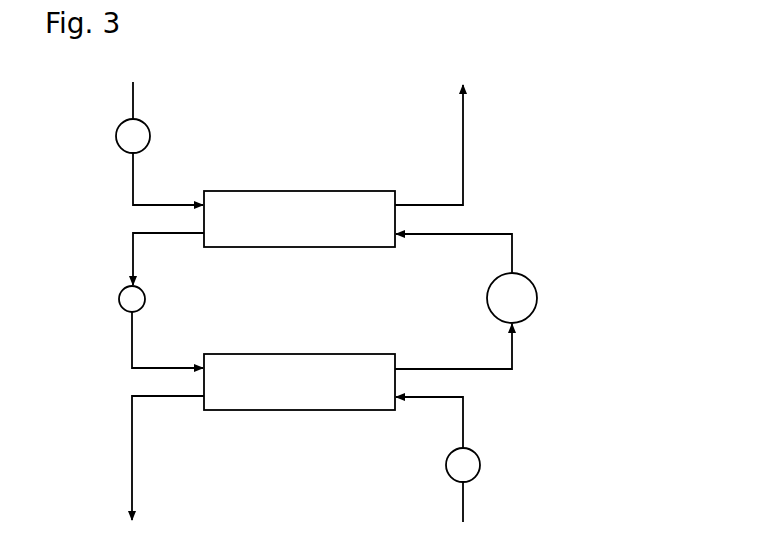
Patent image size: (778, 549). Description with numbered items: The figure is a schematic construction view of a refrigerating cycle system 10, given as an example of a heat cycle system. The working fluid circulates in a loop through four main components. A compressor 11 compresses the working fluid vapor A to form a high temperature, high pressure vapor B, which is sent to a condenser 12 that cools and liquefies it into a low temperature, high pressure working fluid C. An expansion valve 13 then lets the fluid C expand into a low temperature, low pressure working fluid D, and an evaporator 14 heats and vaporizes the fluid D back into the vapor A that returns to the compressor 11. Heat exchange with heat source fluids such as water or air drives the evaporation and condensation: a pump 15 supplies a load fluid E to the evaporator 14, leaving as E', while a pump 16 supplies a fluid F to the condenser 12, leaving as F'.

The refrigerating cycle system 10 is at (278, 130).
The compressor 11 is at (537, 298).
The condenser 12 is at (320, 191).
The expansion valve 13 is at (119, 297).
The evaporator 14 is at (320, 354).
The pump 15 is at (480, 465).
The pump 16 is at (116, 132).